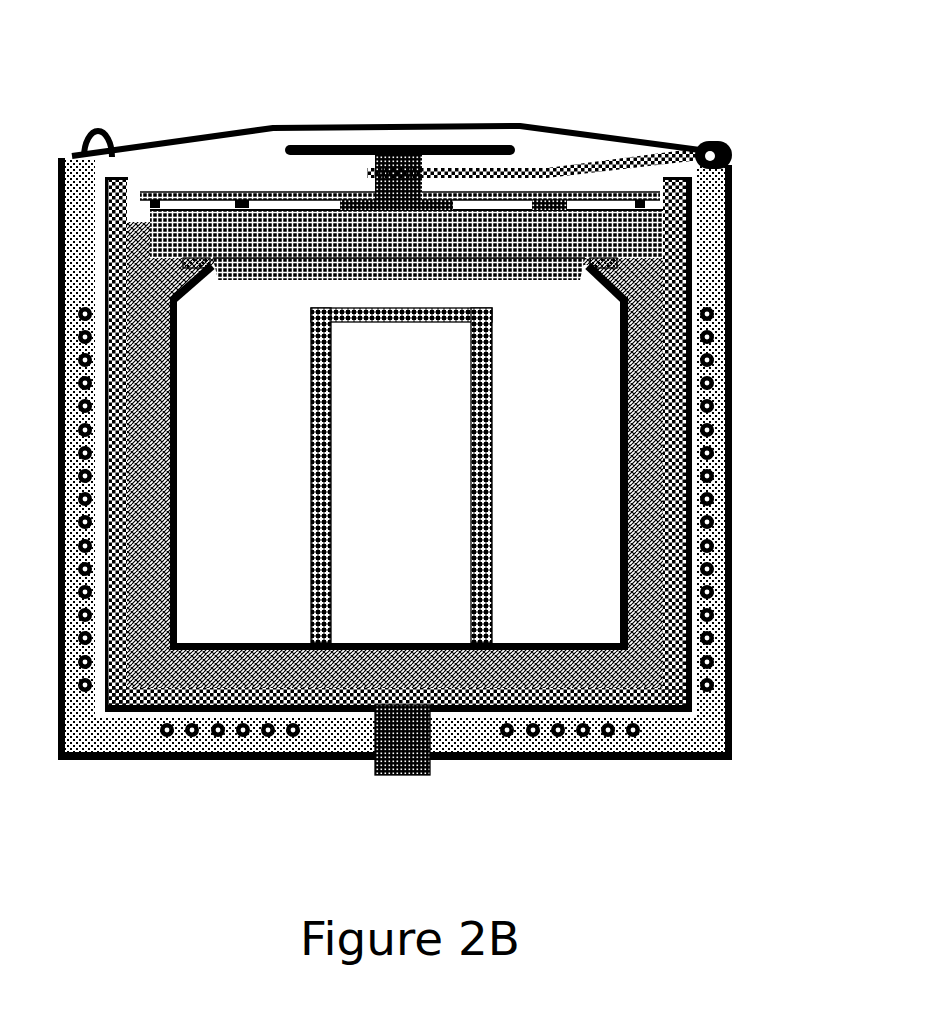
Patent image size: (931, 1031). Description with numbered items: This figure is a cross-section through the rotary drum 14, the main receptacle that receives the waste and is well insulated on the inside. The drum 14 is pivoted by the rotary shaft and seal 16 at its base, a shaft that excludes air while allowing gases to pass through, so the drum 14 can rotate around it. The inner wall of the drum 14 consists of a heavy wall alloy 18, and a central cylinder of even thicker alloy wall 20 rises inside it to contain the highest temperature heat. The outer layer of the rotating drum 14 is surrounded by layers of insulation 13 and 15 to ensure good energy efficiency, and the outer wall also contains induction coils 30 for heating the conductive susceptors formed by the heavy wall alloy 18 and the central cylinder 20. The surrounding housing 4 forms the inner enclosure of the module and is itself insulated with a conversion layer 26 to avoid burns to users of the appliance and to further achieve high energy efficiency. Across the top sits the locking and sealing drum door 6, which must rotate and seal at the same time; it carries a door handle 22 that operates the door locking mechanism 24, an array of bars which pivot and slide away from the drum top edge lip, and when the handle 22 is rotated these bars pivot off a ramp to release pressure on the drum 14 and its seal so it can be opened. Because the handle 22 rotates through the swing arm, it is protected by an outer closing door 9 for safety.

The housing 4 is at (732, 280).
The conversion layer 26 is at (87, 205).
The insulation layer 13 is at (637, 697).
The insulation layer 15 is at (445, 670).
The heavy wall alloy 18 is at (373, 650).
The drum door 6 is at (580, 240).
The door locking mechanism 24 is at (227, 193).
The outer closing door 9 is at (355, 132).
The door handle 22 is at (465, 145).
The central cylinder 20 is at (310, 617).
The rotary shaft and seal 16 is at (423, 773).
The induction coils 30 is at (732, 410).
The rotary drum 14 is at (588, 760).